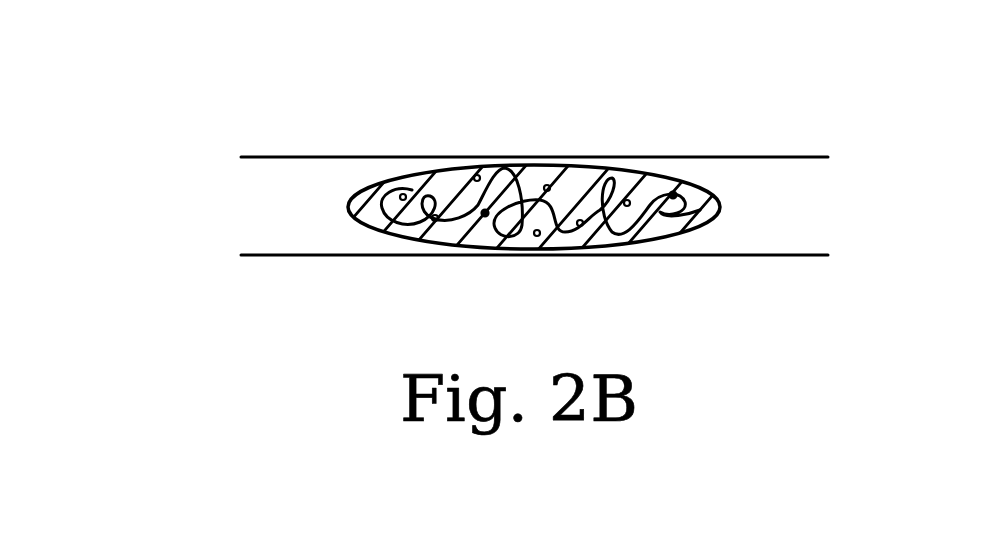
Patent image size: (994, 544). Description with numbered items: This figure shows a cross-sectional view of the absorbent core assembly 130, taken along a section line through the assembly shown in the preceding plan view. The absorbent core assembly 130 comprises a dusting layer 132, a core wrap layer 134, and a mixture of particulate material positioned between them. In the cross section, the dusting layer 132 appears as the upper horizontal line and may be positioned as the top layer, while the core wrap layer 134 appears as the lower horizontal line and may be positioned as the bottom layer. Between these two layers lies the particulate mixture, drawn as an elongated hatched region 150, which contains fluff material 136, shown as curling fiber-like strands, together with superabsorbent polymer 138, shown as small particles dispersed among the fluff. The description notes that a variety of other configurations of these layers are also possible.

The absorbent core assembly 130 is at (152, 128).
The dusting layer 132 is at (320, 156).
The core wrap layer 134 is at (317, 256).
The plug / aggregate mass 150 is at (432, 170).
The fluff material 136 is at (613, 195).
The superabsorbent polymer 138 is at (628, 201).